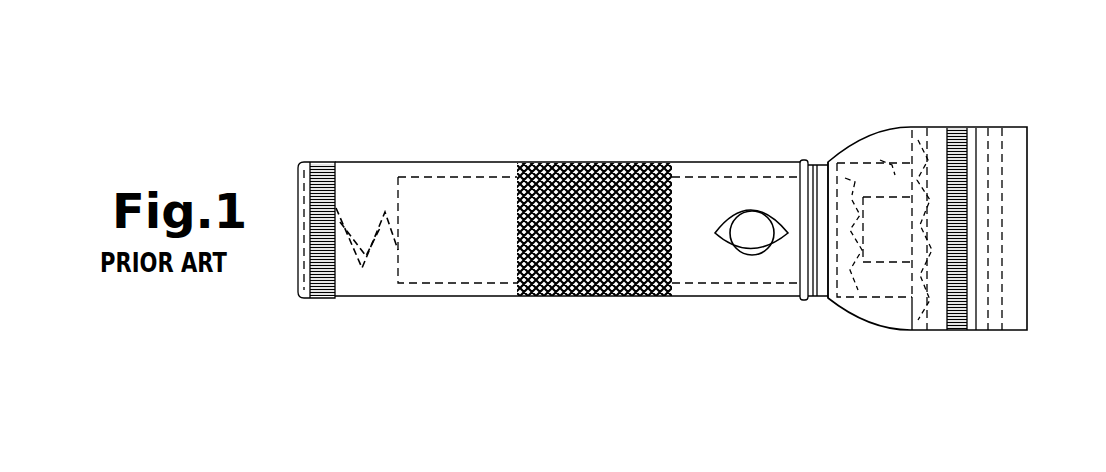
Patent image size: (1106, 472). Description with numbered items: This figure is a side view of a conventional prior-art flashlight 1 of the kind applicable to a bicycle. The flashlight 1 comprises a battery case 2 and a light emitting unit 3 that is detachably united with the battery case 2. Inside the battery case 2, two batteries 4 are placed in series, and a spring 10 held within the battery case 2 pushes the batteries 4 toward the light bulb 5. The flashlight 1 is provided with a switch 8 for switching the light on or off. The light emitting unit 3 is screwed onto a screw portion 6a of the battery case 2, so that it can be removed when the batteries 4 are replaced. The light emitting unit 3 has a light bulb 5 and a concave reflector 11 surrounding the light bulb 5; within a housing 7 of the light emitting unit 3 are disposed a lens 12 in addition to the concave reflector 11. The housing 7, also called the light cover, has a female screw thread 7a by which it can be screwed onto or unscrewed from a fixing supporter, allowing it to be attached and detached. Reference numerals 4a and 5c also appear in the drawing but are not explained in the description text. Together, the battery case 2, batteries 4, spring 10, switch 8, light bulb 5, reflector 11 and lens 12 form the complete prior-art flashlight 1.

The flashlight 1 is at (765, 143).
The battery case 2 is at (703, 158).
The light emitting unit 3 is at (873, 130).
The batteries 4 is at (457, 298).
The battery contact 4a is at (838, 305).
The light bulb 5 is at (922, 130).
The reflector flange 5c is at (843, 150).
The screw portion 6a is at (873, 305).
The housing 7 is at (855, 148).
The female screw thread 7a is at (893, 160).
The switch 8 is at (752, 240).
The spring 10 is at (366, 200).
The concave reflector 11 is at (930, 332).
The lens 12 is at (992, 332).